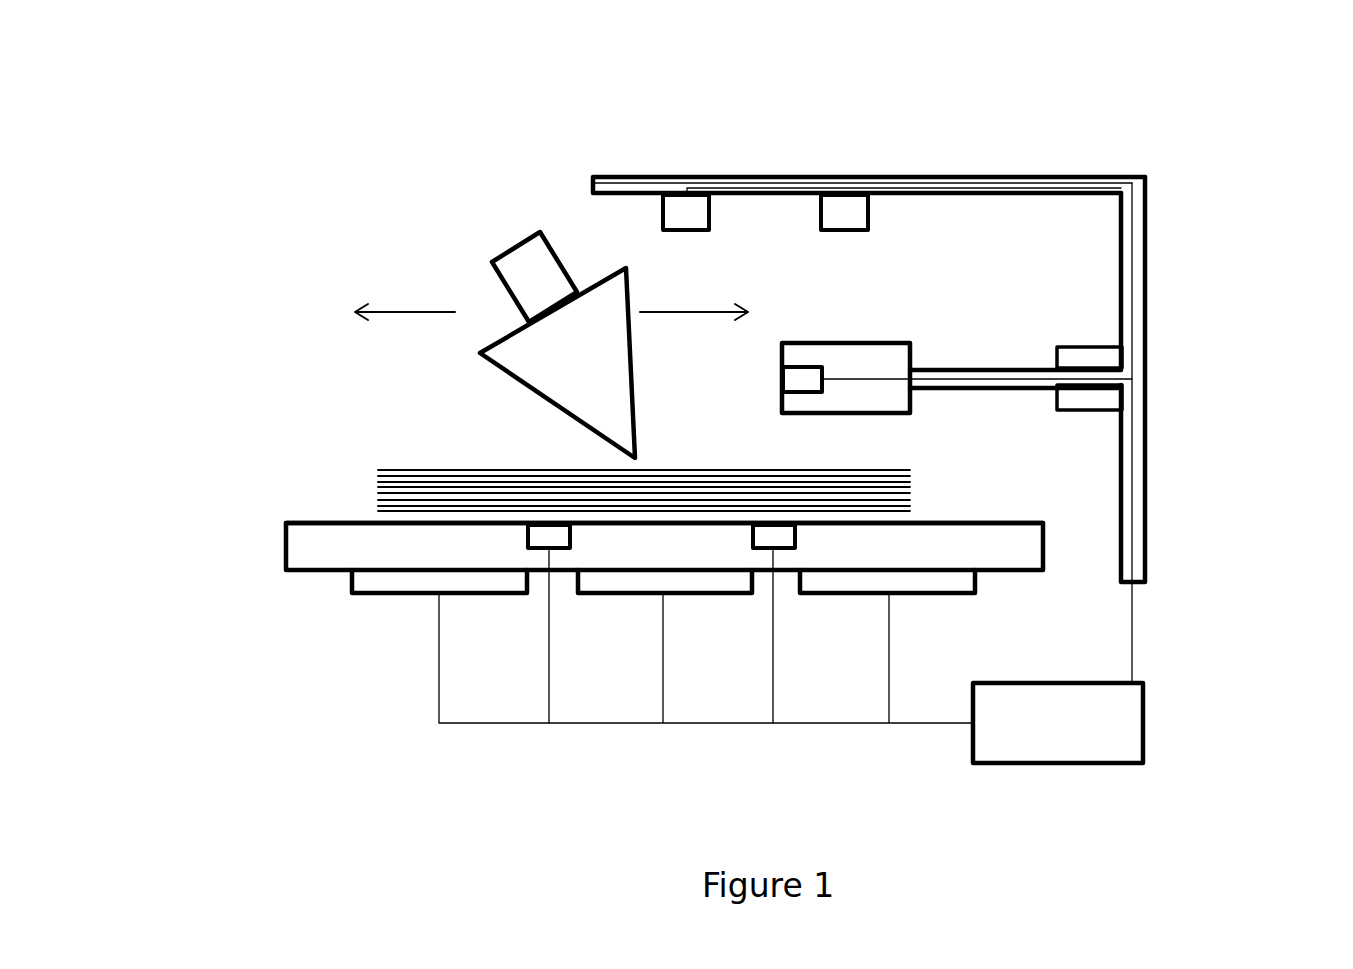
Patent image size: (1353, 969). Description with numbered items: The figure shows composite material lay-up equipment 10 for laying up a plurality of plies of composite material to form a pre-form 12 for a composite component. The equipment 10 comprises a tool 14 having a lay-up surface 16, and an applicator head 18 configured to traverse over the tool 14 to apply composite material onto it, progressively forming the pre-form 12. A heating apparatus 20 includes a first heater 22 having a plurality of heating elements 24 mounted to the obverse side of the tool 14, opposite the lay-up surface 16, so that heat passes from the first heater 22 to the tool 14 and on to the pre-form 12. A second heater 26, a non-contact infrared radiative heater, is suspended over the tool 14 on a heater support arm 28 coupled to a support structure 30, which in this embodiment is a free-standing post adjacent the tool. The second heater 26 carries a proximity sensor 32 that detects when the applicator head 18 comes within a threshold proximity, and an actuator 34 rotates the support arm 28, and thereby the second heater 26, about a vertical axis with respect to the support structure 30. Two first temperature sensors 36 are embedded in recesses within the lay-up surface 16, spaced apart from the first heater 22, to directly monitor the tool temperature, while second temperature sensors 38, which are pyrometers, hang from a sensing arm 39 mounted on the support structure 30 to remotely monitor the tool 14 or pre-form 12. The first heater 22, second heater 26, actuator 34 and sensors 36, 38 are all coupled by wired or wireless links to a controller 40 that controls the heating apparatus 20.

The composite material lay-up equipment 10 is at (238, 115).
The pre-form 12 is at (334, 493).
The tool 14 is at (300, 545).
The lay-up surface 16 is at (407, 522).
The applicator head 18 is at (545, 352).
The heating apparatus 20 is at (1174, 409).
The first heater 22 is at (699, 752).
The heating elements 24 is at (395, 598).
The second heater 26 is at (876, 340).
The heater support arm 28 is at (1018, 391).
The support structure 30 is at (1140, 300).
The proximity sensor 32 is at (800, 378).
The actuator 34 is at (1108, 400).
The first temperature sensors 36 is at (537, 548).
The second temperature sensors 38 is at (681, 209).
The sensing arm 39 is at (975, 176).
The controller 40 is at (1083, 742).